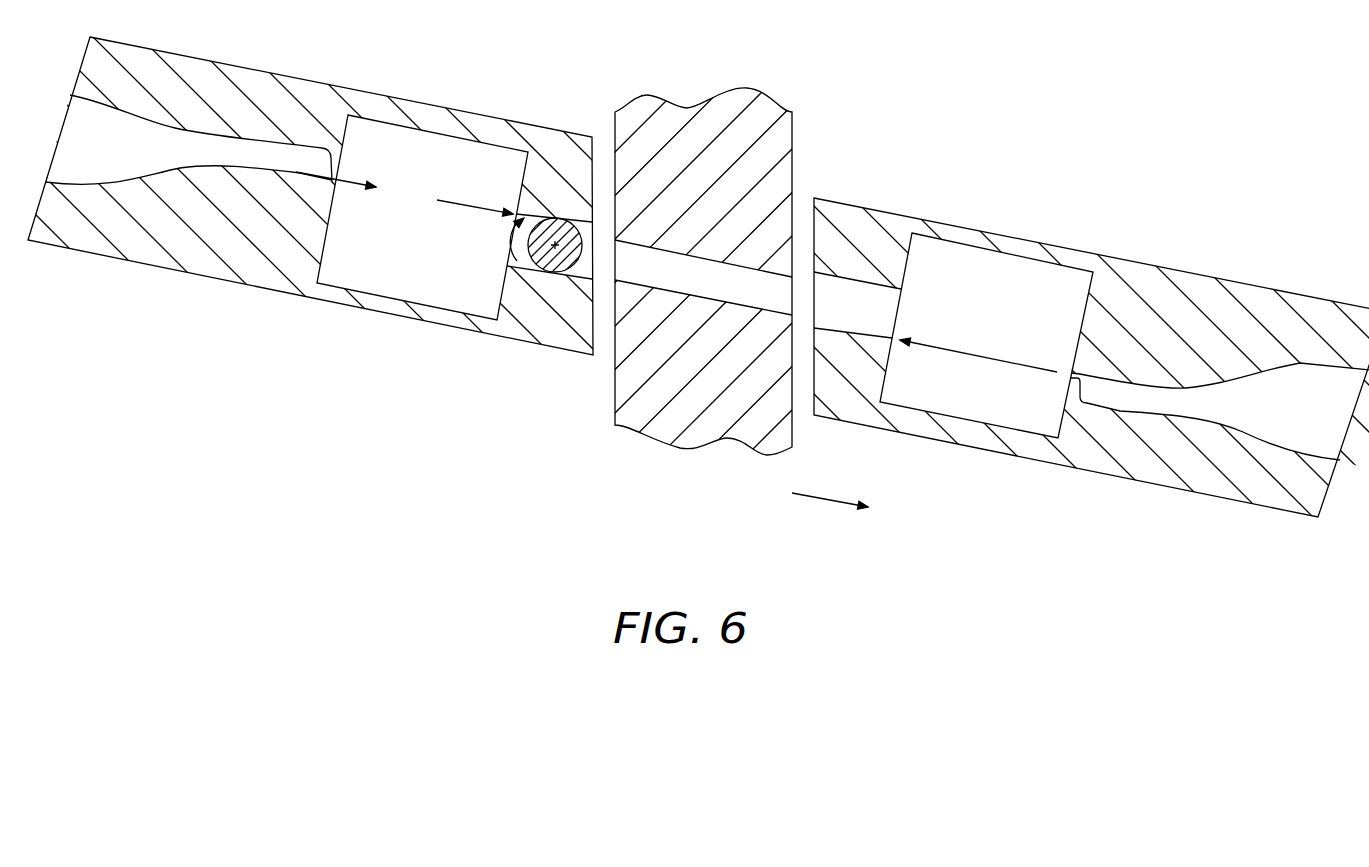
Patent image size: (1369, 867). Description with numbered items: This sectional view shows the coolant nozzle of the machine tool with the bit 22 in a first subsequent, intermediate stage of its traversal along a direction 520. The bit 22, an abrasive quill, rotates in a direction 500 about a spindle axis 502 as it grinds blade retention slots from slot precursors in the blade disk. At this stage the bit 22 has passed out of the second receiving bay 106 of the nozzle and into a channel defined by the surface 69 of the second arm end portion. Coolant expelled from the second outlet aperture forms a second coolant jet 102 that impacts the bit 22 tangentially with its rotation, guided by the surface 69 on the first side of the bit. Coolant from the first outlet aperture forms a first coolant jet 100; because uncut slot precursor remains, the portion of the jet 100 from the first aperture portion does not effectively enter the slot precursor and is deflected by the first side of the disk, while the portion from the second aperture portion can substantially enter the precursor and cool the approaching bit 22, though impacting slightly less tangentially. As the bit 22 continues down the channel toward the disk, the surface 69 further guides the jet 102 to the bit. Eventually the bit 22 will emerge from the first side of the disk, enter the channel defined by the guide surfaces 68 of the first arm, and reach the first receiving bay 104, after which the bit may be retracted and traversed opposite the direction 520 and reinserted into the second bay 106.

The bit 22 is at (583, 242).
The guide surfaces 68 is at (875, 339).
The guide surface 69 is at (577, 278).
The first coolant jet 100 is at (1003, 360).
The second coolant jet 102 is at (447, 200).
The first receiving bay 104 is at (1030, 422).
The second receiving bay 106 is at (472, 303).
The direction of rotation 500 is at (513, 247).
The spindle axis 502 is at (548, 220).
The traversal direction 520 is at (833, 503).